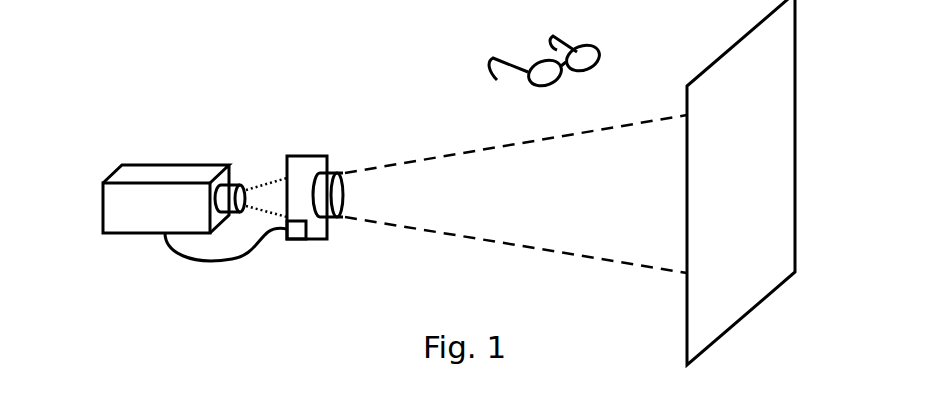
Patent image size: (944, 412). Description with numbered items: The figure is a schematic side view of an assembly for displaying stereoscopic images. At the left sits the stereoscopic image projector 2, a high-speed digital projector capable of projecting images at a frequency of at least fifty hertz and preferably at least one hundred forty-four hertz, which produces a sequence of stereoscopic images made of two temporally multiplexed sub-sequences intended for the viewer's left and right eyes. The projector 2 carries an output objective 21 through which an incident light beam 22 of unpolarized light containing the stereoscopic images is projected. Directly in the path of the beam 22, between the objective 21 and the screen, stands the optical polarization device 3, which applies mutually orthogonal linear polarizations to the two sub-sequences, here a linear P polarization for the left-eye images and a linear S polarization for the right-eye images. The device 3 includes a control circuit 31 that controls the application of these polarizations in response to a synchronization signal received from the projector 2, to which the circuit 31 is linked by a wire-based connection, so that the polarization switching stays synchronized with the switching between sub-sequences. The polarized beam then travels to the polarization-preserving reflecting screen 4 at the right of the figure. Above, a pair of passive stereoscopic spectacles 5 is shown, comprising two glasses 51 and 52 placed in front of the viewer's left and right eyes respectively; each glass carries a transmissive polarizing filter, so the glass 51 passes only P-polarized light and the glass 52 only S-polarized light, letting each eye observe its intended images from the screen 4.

The stereoscopic image projector 2 is at (165, 221).
The output objective 21 is at (235, 183).
The incident light beam 22 is at (261, 209).
The optical polarization device 3 is at (302, 156).
The control circuit 31 is at (297, 240).
The polarization-preserving reflecting screen 4 is at (753, 188).
The pair of passive stereoscopic spectacles 5 is at (490, 62).
The glass 51 is at (598, 54).
The glass 52 is at (537, 80).